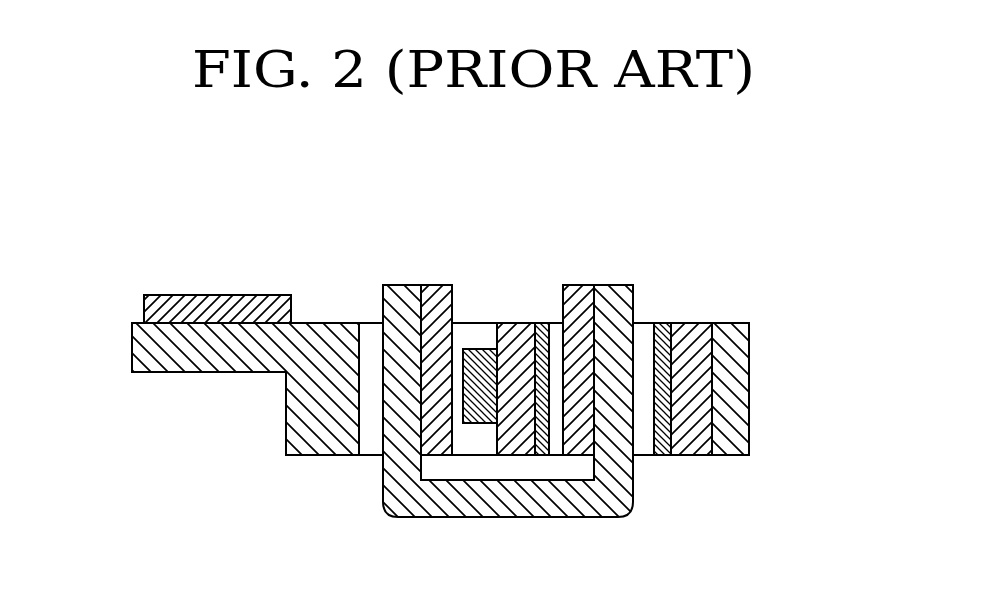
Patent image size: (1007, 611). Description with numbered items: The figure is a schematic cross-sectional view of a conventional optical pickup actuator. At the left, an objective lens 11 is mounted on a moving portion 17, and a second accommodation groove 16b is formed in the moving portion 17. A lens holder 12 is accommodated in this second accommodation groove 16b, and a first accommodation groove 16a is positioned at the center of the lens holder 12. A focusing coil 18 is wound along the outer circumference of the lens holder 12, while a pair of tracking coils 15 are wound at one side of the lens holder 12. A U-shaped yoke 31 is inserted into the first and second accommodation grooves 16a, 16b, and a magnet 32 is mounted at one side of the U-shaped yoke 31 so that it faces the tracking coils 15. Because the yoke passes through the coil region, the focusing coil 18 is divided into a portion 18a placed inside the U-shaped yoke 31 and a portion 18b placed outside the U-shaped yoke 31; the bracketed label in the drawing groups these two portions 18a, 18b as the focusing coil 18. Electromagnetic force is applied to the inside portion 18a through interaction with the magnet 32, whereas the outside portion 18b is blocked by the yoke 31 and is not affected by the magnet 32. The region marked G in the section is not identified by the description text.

The objective lens 11 is at (181, 305).
The lens holder 12 is at (537, 454).
The tracking coils 15 is at (470, 423).
The first accommodation groove 16a is at (646, 333).
The second accommodation groove 16b is at (470, 331).
The moving portion 17 is at (305, 414).
The focusing coil 18 is at (552, 176).
The portion of the focusing coil placed inside the yoke 18a is at (517, 332).
The portion of the focusing coil placed outside the yoke 18b is at (693, 332).
The U-shaped yoke 31 is at (621, 285).
The magnet 32 is at (580, 287).
The gate G is at (479, 377).